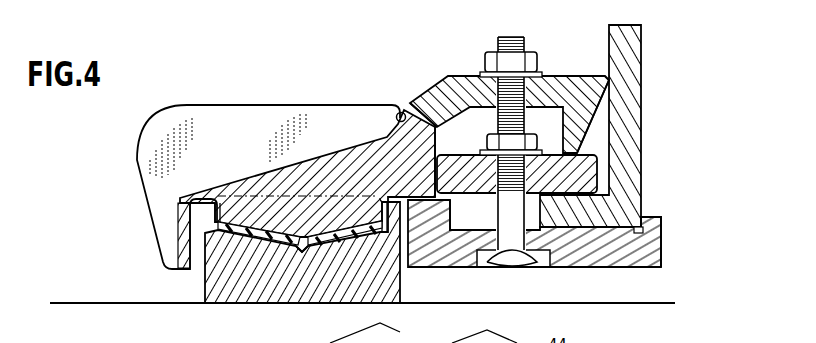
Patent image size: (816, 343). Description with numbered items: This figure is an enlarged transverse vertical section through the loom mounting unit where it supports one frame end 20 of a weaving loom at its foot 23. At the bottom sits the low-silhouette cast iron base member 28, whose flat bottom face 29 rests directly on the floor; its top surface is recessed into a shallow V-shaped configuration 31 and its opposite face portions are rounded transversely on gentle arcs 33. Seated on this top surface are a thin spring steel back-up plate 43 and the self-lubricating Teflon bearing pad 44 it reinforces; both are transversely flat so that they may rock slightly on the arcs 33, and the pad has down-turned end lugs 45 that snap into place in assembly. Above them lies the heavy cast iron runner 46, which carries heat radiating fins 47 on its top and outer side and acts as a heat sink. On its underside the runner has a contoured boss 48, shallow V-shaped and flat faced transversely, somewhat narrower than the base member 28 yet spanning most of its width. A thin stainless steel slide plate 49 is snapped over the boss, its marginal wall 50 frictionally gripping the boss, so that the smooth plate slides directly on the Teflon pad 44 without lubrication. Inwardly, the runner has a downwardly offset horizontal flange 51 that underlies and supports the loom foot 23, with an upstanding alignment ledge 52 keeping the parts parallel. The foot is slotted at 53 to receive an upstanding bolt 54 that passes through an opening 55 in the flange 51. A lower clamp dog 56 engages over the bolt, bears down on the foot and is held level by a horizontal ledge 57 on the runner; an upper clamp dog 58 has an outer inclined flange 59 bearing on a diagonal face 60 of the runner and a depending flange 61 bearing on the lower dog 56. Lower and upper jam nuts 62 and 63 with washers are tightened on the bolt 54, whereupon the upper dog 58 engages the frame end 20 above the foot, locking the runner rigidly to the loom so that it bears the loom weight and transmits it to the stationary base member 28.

The frame end 20 is at (654, 61).
The foot 23 is at (574, 217).
The base member 28 is at (200, 284).
The bottom face 29 is at (302, 253).
The V-shaped configuration 31 is at (313, 242).
The arcs 33 is at (228, 242).
The back-up plate 43 is at (243, 242).
The bearing pad 44 is at (210, 224).
The end lug 45 is at (423, 342).
The runner 46 is at (330, 150).
The heat radiating fin 47 is at (263, 122).
The boss 48 is at (272, 220).
The slide plate 49 is at (283, 223).
The marginal wall 50 is at (210, 200).
The flange 51 is at (602, 257).
The alignment ledge 52 is at (644, 217).
The slot 53 is at (535, 210).
The bolt 54 is at (523, 120).
The opening 55 is at (464, 268).
The lower clamp dog 56 is at (587, 168).
The horizontal ledge 57 is at (427, 197).
The upper clamp dog 58 is at (590, 97).
The inclined flange 59 is at (427, 97).
The diagonal face 60 is at (403, 108).
The depending flange 61 is at (575, 138).
The lower jam nut 62 is at (492, 142).
The upper jam nut 63 is at (493, 58).